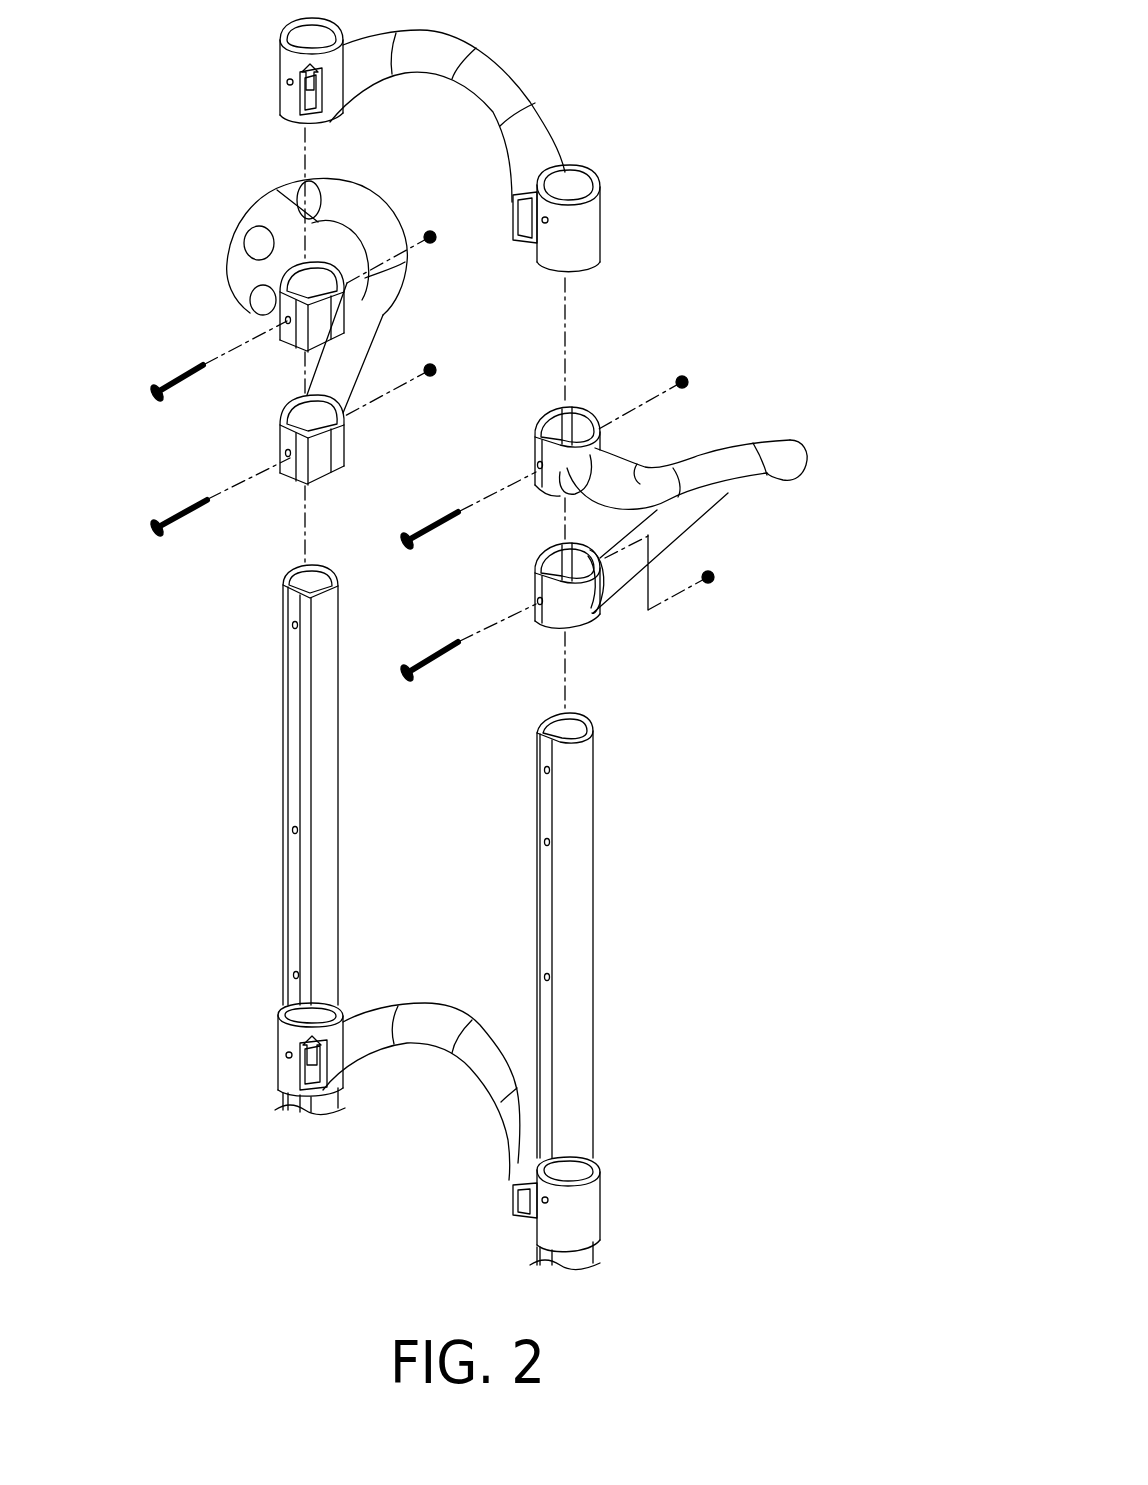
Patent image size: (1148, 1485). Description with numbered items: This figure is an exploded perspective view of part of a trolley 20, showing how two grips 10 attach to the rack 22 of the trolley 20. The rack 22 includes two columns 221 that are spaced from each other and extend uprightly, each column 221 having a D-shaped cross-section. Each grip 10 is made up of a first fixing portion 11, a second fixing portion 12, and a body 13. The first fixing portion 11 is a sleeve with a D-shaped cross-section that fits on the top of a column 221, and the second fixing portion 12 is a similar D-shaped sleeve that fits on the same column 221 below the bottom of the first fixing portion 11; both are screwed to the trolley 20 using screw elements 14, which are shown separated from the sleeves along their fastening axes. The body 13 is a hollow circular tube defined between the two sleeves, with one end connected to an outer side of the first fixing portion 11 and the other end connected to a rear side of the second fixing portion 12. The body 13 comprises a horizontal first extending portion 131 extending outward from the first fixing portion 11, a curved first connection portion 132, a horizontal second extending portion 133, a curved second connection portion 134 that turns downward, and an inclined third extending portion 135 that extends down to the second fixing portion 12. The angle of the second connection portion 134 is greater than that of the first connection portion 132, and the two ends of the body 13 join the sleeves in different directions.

The grip 10 is at (258, 212).
The first fixing portion 11 is at (332, 315).
The second fixing portion 12 is at (330, 452).
The body 13 is at (362, 183).
The screw element 14 is at (168, 378).
The trolley 20 is at (600, 1015).
The rack 22 is at (287, 905).
The first extending portion 131 is at (268, 292).
The first connection portion 132 is at (242, 262).
The second extending portion 133 is at (292, 200).
The second connection portion 134 is at (377, 228).
The third extending portion 135 is at (332, 371).
The column 221 is at (295, 795).